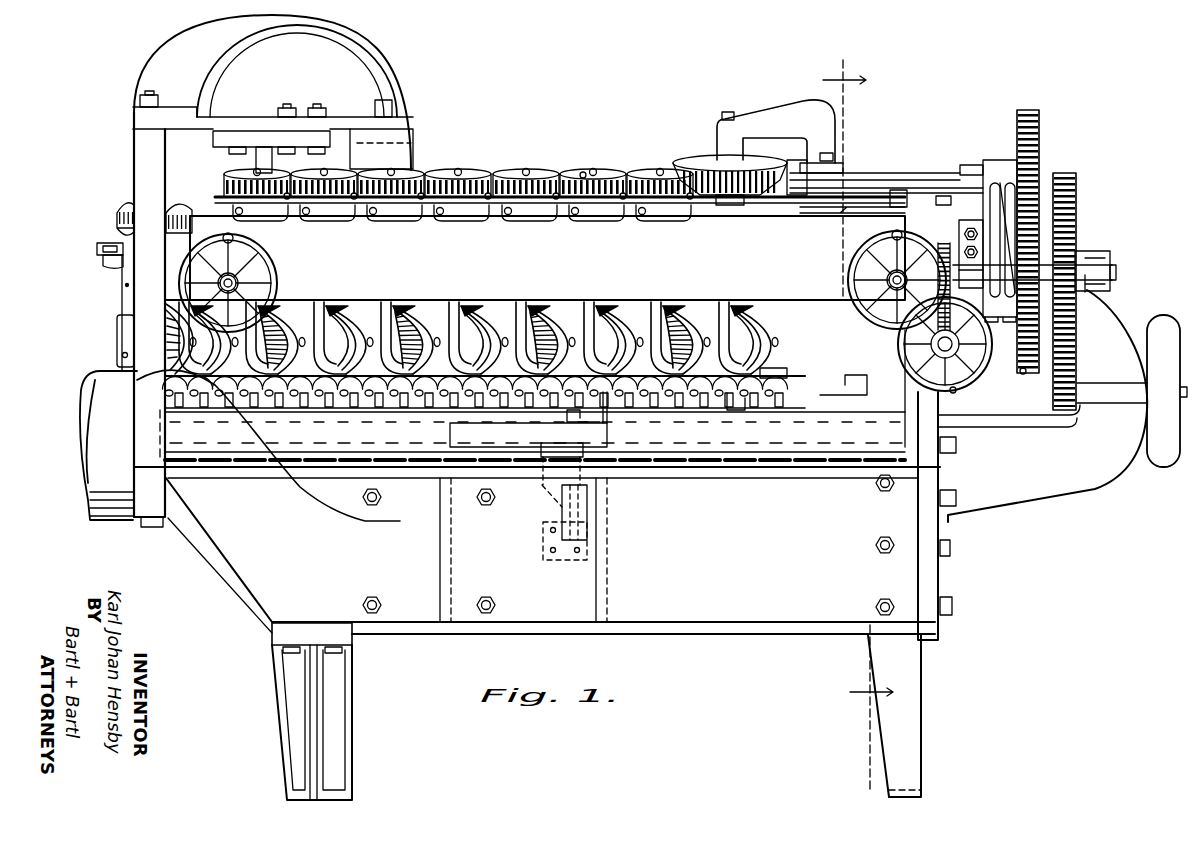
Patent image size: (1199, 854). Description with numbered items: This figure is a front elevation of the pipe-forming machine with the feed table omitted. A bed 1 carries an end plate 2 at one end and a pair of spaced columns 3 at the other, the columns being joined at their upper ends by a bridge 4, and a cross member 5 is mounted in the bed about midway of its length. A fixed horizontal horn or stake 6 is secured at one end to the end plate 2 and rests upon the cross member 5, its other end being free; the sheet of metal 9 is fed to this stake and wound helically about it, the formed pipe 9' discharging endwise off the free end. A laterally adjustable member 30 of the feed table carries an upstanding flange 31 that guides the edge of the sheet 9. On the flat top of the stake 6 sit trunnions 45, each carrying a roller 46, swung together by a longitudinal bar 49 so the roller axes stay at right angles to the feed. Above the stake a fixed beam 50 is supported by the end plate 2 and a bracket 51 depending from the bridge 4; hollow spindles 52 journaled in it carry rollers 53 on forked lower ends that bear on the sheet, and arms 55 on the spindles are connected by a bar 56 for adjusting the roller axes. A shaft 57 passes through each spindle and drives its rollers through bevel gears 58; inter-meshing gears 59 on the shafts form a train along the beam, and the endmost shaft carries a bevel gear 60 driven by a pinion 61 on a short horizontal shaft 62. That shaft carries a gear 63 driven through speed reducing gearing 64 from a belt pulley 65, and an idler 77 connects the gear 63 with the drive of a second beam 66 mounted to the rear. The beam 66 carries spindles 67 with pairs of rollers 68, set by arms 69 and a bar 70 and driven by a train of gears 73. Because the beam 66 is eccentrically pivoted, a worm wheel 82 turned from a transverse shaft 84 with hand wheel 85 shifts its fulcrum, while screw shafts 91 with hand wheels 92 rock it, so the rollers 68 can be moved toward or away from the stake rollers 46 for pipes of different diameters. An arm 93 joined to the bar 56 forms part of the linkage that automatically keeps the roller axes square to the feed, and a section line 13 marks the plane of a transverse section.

The bed 1 is at (737, 625).
The end plate 2 is at (925, 474).
The columns 3 is at (146, 148).
The bridge 4 is at (273, 92).
The cross member 5 is at (603, 533).
The horn or stake 6 is at (532, 435).
The sheet of metal 9 is at (484, 402).
The formed pipe 9' is at (222, 445).
The section line 13 is at (855, 63).
The laterally adjustable member 30 is at (566, 419).
The upstanding flange 31 is at (608, 419).
The trunnions 45 is at (732, 397).
The roller 46 is at (762, 378).
The longitudinally disposed bar 49 is at (829, 397).
The beam 50 is at (535, 296).
The bracket 51 is at (332, 138).
The hollow spindles 52 is at (711, 305).
The rollers 53 is at (750, 343).
The arms 55 is at (616, 210).
The longitudinally disposed bar 56 is at (731, 203).
The shaft 57 is at (596, 173).
The bevel gears 58 is at (692, 305).
The inter-meshing gears 59 is at (582, 173).
The bevel gear 60 is at (694, 158).
The pinion 61 is at (786, 196).
The short horizontal shaft 62 is at (914, 178).
The gear 63 is at (1042, 136).
The train of speed reducing gearing 64 is at (1072, 250).
The belt pulley 65 is at (1132, 391).
The second beam 66 is at (126, 285).
The spindles 67 is at (121, 323).
The rollers 68 is at (172, 330).
The arms 69 is at (106, 262).
The longitudinally disposed bar 70 is at (98, 249).
The train of gears 73 is at (122, 208).
The idler 77 is at (1023, 372).
The worm wheel 82 is at (955, 243).
The transverse shaft 84 is at (963, 346).
The hand wheel 85 is at (955, 391).
The screw shafts 91 is at (237, 284).
The hand wheels 92 is at (252, 252).
The arm 93 is at (878, 212).